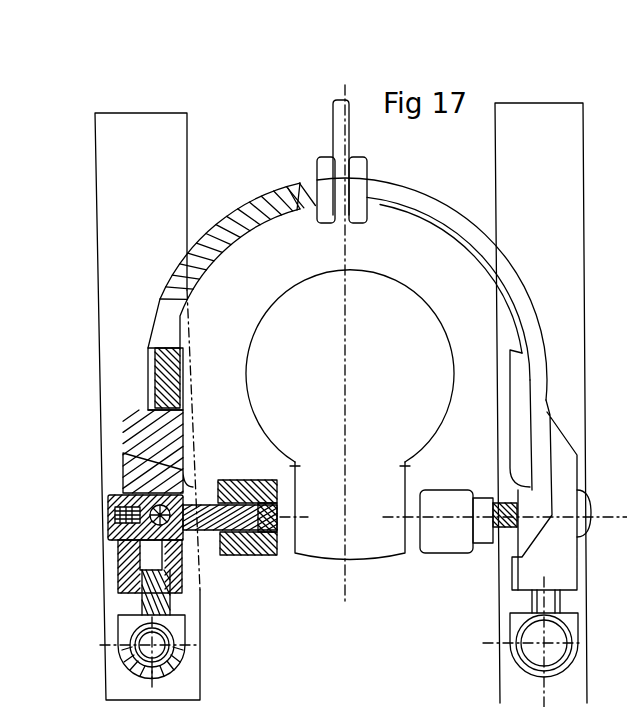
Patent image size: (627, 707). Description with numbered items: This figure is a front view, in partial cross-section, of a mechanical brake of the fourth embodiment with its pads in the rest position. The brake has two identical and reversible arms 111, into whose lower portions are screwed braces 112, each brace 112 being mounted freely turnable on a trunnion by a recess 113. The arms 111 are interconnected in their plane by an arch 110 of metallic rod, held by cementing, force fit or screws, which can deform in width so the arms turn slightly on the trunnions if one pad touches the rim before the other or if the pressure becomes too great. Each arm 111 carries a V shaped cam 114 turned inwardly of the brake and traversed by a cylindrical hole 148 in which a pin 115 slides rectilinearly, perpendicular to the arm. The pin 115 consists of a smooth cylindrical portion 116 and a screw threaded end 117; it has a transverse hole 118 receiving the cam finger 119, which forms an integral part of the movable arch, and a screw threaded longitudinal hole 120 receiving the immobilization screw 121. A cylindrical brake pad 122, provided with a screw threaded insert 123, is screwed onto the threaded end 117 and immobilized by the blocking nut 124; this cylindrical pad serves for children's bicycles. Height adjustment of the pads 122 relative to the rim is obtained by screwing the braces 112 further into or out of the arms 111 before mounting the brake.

The arch 110 is at (247, 214).
The arm 111 is at (183, 362).
The brace 112 is at (178, 655).
The recess 113 is at (133, 665).
The V shaped cam 114 is at (202, 490).
The pin 115 is at (118, 495).
The smooth cylindrical portion 116 is at (145, 548).
The screw threaded end 117 is at (231, 556).
The transverse hole 118 is at (165, 505).
The cam finger 119 is at (142, 542).
The screw threaded longitudinal hole 120 is at (118, 523).
The immobilization screw 121 is at (112, 509).
The cylindrical brake pad 122 is at (281, 558).
The screw threaded insert 123 is at (253, 557).
The blocking nut 124 is at (214, 480).
The cylindrical hole 148 is at (181, 545).